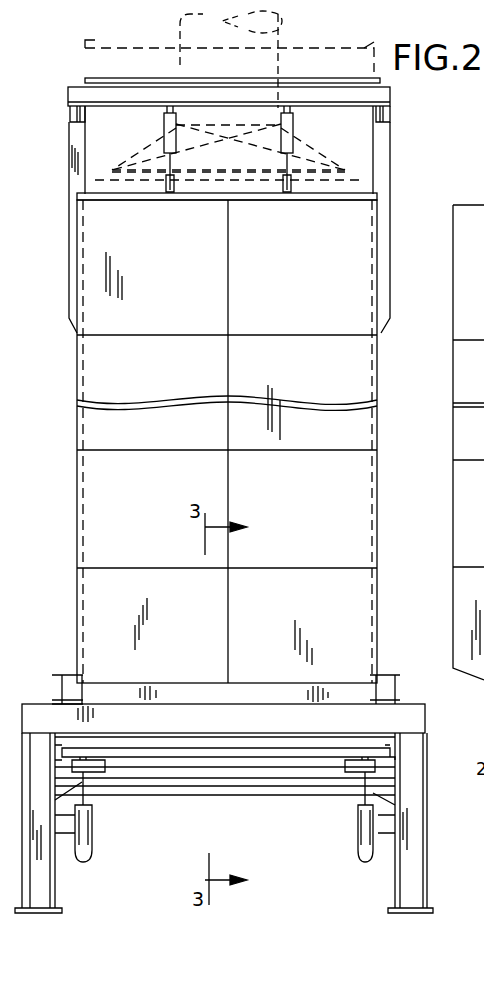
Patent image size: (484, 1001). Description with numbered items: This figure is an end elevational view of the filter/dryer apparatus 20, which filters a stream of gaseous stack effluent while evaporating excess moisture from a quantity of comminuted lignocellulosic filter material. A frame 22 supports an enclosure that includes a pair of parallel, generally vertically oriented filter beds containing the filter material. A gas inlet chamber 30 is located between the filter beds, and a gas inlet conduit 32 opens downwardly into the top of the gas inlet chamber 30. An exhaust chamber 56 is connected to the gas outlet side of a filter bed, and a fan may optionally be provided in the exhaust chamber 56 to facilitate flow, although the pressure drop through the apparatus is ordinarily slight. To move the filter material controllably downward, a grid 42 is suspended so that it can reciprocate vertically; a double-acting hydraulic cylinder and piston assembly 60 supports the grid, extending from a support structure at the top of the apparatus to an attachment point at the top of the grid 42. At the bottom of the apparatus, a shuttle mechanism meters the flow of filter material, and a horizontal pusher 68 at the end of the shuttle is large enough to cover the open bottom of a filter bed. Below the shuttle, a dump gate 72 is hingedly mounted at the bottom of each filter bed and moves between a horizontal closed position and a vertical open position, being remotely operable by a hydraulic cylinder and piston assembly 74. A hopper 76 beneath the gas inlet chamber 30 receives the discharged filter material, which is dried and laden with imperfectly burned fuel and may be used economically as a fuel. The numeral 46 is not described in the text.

The filter/dryer apparatus 20 is at (404, 160).
The frame 22 is at (425, 718).
The gas inlet chamber 30 is at (468, 424).
The gas inlet conduit 32 is at (284, 26).
The grid 42 is at (477, 376).
The container section 46 is at (476, 441).
The exhaust chamber 56 is at (470, 272).
The double-acting hydraulic cylinder and piston assembly 60 is at (164, 127).
The horizontal pusher 68 is at (245, 722).
The dump gate 72 is at (282, 770).
The hydraulic cylinder and piston assembly 74 is at (94, 850).
The hopper 76 is at (233, 787).